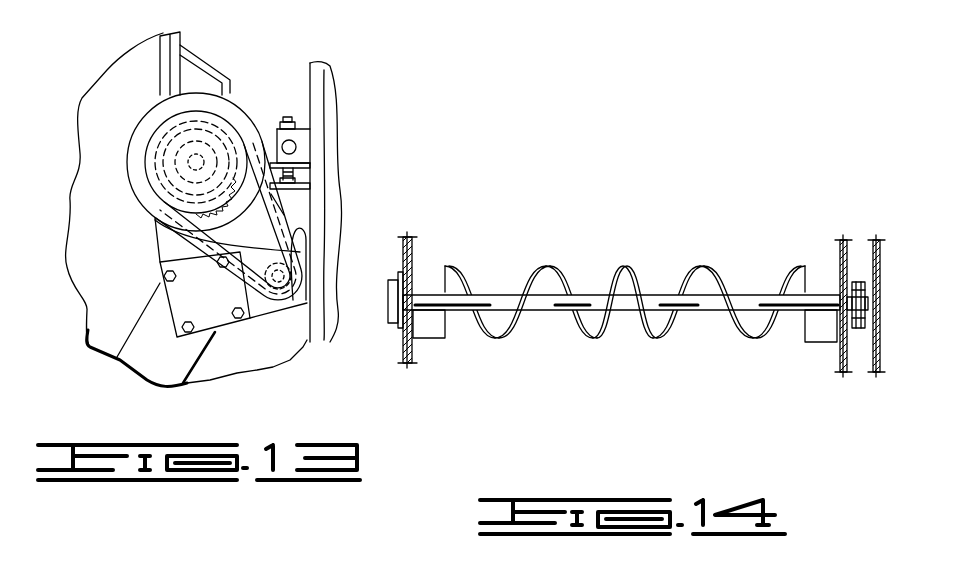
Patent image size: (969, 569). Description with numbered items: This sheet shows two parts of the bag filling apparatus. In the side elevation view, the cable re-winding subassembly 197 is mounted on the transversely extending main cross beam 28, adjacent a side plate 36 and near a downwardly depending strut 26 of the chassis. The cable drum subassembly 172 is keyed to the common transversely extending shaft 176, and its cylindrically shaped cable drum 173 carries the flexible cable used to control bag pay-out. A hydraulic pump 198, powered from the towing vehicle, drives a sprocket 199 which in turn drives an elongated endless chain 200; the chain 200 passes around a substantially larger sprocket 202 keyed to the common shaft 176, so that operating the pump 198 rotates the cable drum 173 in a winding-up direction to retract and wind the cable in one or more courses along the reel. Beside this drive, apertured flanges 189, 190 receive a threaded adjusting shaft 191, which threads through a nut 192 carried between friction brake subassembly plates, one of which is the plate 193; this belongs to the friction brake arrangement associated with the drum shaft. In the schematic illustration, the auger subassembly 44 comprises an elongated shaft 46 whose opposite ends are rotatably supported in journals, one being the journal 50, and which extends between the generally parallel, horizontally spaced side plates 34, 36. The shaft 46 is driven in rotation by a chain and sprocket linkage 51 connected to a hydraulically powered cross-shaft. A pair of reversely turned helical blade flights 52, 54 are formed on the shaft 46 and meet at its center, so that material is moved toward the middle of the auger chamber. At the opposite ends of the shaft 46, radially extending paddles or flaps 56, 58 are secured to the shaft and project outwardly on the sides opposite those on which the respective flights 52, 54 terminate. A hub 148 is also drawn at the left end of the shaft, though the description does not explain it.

In FIG. 13, the cable drum subassembly 172 is at (142, 120).
In FIG. 13, the cable drum 173 is at (143, 132).
In FIG. 13, the common transversely extending shaft 176 is at (175, 147).
In FIG. 13, the larger sprocket 202 is at (175, 183).
In FIG. 13, the cable re-winding subassembly 197 is at (215, 218).
In FIG. 13, the endless chain 200 is at (215, 251).
In FIG. 13, the sprocket 199 is at (308, 260).
In FIG. 13, the hydraulic pump 198 is at (267, 307).
In FIG. 13, the threaded adjusting shaft 191 is at (283, 117).
In FIG. 13, the nut 192 is at (277, 128).
In FIG. 13, the friction brake subassembly plate 193 is at (300, 143).
In FIG. 13, the apertured flange 189 is at (296, 166).
In FIG. 13, the apertured flange 190 is at (322, 197).
In FIG. 13, the downwardly depending strut 26 is at (172, 370).
In FIG. 13, the main cross beam 28 is at (218, 305).
In FIG. 13, the side plate 36 is at (244, 362).
In FIG. 14, the side plate 36 is at (841, 265).
In FIG. 14, the side plate 34 is at (413, 262).
In FIG. 14, the bearing hub 148 is at (393, 316).
In FIG. 14, the paddle 56 is at (441, 336).
In FIG. 14, the paddle 58 is at (820, 333).
In FIG. 14, the elongated shaft 46 is at (751, 300).
In FIG. 14, the auger subassembly 44 is at (625, 263).
In FIG. 14, the helical blade flight 52 is at (548, 268).
In FIG. 14, the helical blade flight 54 is at (758, 332).
In FIG. 14, the chain and sprocket linkage 51 is at (856, 280).
In FIG. 14, the journal 50 is at (848, 325).